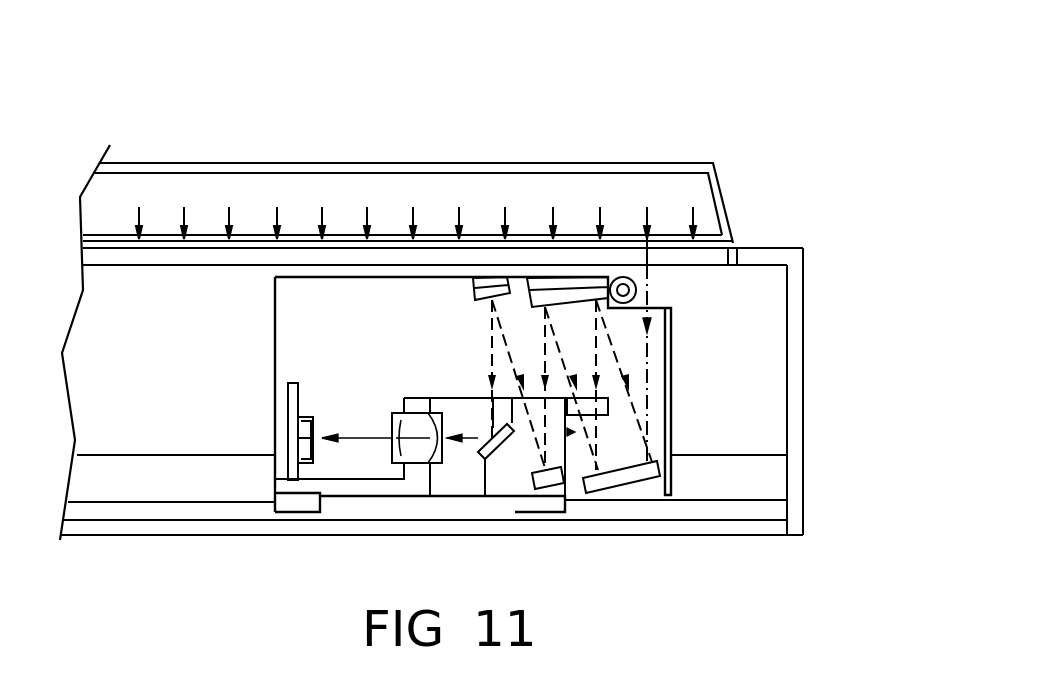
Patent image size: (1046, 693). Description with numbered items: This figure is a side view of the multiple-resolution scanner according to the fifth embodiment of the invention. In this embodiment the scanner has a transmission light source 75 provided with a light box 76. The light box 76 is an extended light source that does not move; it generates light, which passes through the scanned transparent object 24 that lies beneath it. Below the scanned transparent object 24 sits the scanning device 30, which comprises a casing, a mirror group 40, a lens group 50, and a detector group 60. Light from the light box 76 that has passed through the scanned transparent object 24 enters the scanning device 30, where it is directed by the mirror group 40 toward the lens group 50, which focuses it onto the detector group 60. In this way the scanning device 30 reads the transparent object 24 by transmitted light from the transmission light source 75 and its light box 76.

The scanned transparent object 24 is at (277, 238).
The transmission light source 75 is at (368, 173).
The light box 76 is at (475, 200).
The scanning device 30 is at (240, 373).
The mirror group 40 is at (485, 367).
The lens group 50 is at (391, 412).
The detector group 60 is at (303, 383).